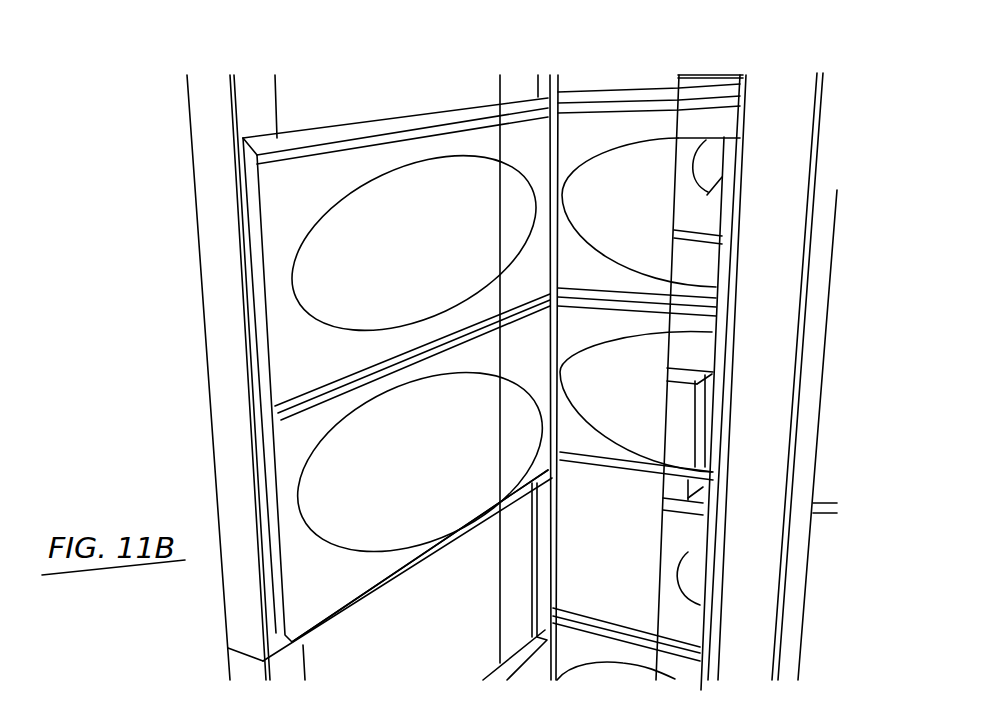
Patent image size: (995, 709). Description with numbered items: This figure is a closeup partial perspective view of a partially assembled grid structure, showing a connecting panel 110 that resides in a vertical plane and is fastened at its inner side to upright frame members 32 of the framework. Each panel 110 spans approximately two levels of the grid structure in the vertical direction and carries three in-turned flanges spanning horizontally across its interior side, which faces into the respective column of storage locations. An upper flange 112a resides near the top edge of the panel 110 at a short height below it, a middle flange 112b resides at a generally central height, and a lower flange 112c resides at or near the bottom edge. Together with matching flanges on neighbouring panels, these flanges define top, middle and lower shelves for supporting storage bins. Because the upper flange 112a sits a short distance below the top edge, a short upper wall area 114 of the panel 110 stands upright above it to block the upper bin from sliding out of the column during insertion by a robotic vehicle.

The frame member 32 is at (225, 362).
The connecting panel 110 is at (328, 588).
The upper flange 112a is at (370, 142).
The middle flange 112b is at (343, 380).
The lower flange 112c is at (318, 615).
The upper wall area 114 is at (300, 140).